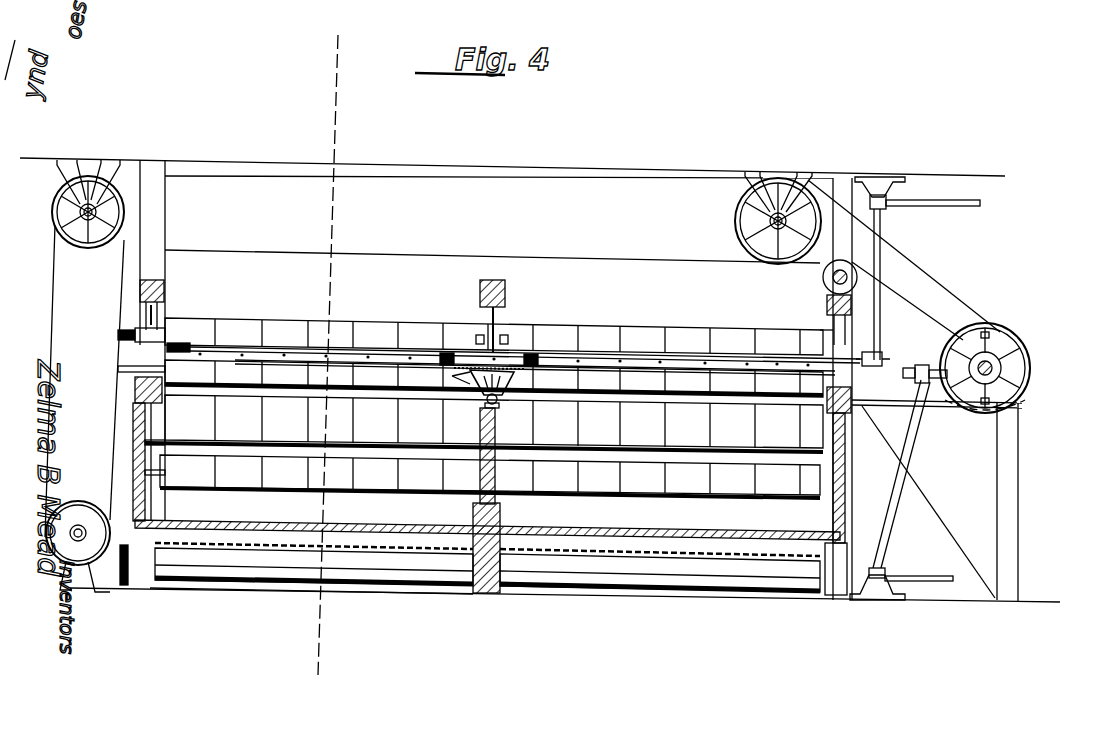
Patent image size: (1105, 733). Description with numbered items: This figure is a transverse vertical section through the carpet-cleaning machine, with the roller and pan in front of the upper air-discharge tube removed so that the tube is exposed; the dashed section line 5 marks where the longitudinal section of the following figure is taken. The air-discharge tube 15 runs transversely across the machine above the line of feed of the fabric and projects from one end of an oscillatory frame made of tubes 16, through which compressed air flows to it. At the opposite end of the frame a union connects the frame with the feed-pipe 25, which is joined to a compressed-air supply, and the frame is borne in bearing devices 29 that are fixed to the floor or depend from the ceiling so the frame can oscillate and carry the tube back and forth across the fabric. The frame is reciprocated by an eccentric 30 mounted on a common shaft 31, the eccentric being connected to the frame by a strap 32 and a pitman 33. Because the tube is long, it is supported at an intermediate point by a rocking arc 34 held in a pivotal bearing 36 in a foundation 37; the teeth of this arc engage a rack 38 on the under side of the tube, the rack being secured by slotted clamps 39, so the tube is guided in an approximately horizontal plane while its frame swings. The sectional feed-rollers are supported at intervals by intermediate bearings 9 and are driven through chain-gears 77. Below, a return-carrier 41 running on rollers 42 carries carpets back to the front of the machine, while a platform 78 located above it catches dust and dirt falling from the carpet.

The section line 5 is at (326, 354).
The intermediate bearings 9 is at (498, 312).
The air-discharge tube 15 is at (728, 345).
The oscillatory frame tubes 16 is at (878, 268).
The feed-pipe 25 is at (965, 208).
The bearing devices 29 is at (900, 192).
The eccentric 30 is at (988, 328).
The shaft 31 is at (1000, 368).
The strap 32 is at (990, 350).
The pitman 33 is at (880, 357).
The rocking arc 34 is at (520, 392).
The pivotal bearing 36 is at (492, 398).
The foundation 37 is at (484, 400).
The rack 38 is at (462, 378).
The slotted clamps 39 is at (447, 353).
The return-carrier 41 is at (418, 583).
The rollers 42 is at (222, 565).
The chain-gears 77 is at (78, 533).
The platform 78 is at (487, 520).